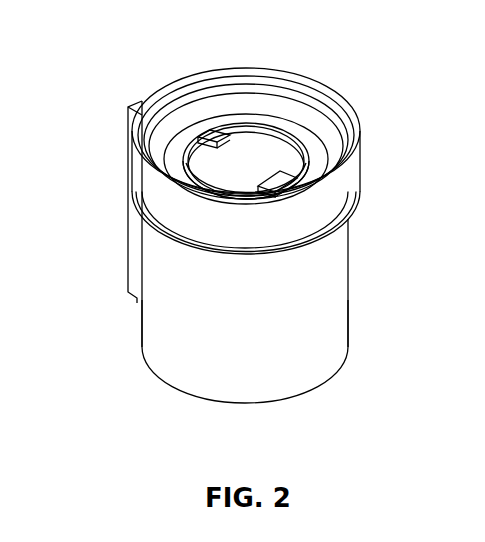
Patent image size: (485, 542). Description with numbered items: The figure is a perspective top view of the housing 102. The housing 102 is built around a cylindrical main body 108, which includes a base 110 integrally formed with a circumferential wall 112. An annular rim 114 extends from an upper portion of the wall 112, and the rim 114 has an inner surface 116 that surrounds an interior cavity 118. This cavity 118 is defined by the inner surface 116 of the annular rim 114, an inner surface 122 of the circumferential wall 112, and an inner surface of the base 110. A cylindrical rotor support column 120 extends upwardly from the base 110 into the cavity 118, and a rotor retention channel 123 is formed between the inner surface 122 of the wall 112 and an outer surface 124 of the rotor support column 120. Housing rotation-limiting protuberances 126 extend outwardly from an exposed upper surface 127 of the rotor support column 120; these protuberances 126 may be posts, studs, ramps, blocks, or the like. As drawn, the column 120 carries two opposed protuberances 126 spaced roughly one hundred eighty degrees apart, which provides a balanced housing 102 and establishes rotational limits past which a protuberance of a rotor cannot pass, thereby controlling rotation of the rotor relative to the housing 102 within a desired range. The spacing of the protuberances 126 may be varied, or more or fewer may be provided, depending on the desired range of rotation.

The housing 102 is at (121, 68).
The cylindrical main body 108 is at (356, 290).
The base 110 is at (265, 406).
The circumferential wall 112 is at (333, 326).
The annular rim 114 is at (361, 148).
The inner surface of the annular rim 116 is at (300, 92).
The interior cavity 118 is at (249, 128).
The cylindrical rotor support column 120 is at (258, 157).
The inner surface of the circumferential wall 122 is at (176, 163).
The rotor retention channel 123 is at (313, 153).
The outer surface of the rotor support column 124 is at (190, 177).
The housing rotation-limiting protuberances 126 is at (208, 132).
The exposed upper surface of the rotor support column 127 is at (225, 174).